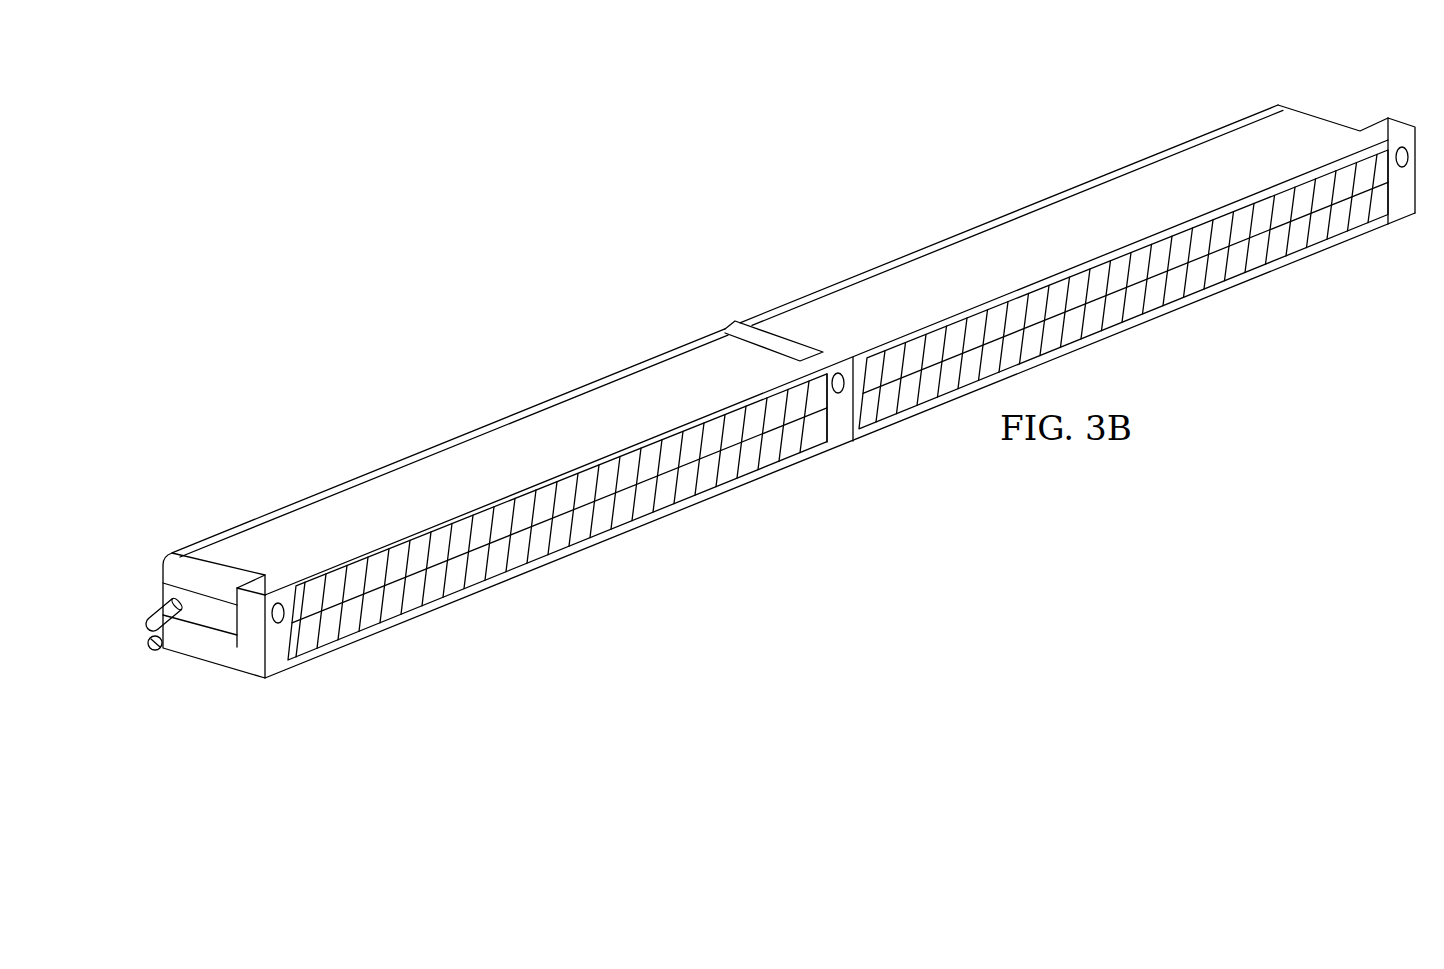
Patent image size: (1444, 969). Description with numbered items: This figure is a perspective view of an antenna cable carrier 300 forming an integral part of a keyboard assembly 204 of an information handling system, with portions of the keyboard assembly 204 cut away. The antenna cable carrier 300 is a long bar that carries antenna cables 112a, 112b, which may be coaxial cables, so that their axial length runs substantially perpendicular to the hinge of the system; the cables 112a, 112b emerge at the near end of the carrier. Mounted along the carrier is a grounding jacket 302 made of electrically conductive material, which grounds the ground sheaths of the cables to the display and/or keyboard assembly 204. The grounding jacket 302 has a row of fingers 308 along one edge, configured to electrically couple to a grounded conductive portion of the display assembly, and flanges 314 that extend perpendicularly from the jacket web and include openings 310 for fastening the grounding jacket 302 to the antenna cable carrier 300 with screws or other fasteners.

The antenna cable carrier 300 is at (634, 254).
The keyboard assembly 204 is at (1004, 219).
The grounding jacket 302 is at (688, 510).
The fingers 308 is at (419, 606).
The openings 310 is at (278, 602).
The flanges 314 is at (276, 666).
The antenna cable 112a is at (152, 651).
The antenna cable 112b is at (150, 614).